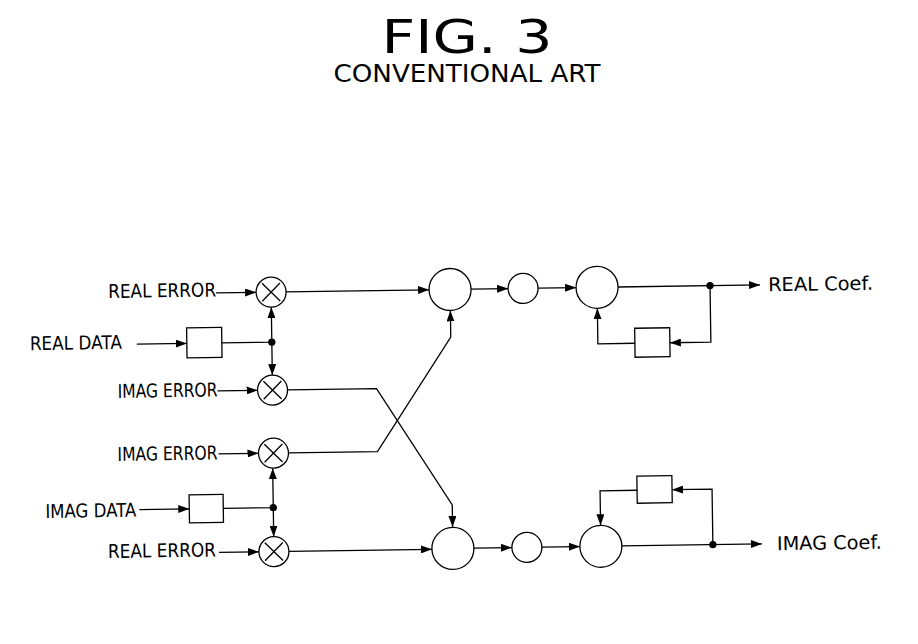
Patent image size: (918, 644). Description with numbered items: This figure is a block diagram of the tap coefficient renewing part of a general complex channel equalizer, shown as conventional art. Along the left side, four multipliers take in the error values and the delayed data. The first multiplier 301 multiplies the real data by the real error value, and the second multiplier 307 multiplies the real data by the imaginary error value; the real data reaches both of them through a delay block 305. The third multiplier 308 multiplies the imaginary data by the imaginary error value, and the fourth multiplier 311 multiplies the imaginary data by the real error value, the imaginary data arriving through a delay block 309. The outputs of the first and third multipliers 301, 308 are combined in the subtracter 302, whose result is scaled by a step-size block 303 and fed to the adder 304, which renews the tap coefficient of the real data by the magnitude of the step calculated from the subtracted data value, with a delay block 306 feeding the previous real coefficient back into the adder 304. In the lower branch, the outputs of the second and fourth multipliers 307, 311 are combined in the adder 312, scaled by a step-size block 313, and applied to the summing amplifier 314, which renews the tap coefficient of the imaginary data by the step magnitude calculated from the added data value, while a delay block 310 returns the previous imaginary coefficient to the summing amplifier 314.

The first multiplier 301 is at (284, 279).
The subtracter 302 is at (467, 274).
The step size multiplier mu 303 is at (533, 277).
The adder 304 is at (609, 271).
The delay (real data) 305 is at (223, 328).
The delay (real coefficient feedback) 306 is at (660, 360).
The second multiplier 307 is at (284, 377).
The third multiplier 308 is at (284, 440).
The delay (imag data) 309 is at (222, 495).
The delay (imag coefficient feedback) 310 is at (660, 479).
The fourth multiplier 311 is at (283, 538).
The adder 312 is at (466, 533).
The step size multiplier mu 313 is at (533, 536).
The summing amplifier 314 is at (614, 564).